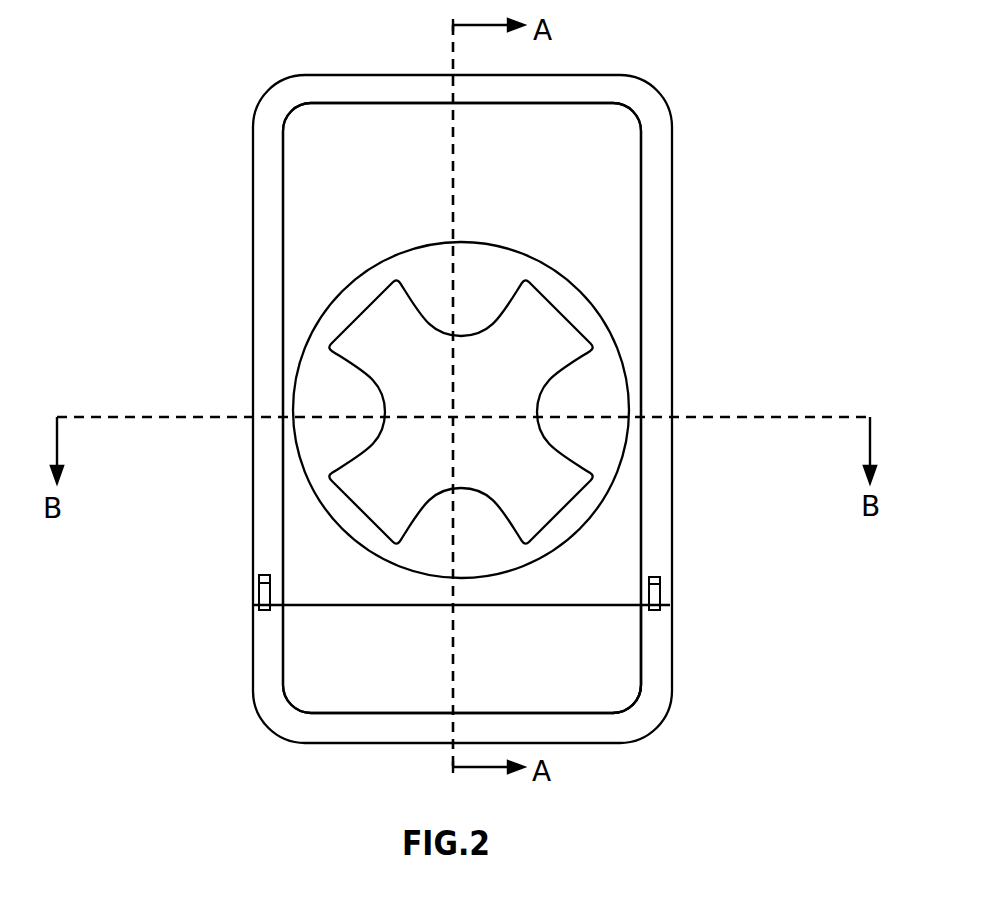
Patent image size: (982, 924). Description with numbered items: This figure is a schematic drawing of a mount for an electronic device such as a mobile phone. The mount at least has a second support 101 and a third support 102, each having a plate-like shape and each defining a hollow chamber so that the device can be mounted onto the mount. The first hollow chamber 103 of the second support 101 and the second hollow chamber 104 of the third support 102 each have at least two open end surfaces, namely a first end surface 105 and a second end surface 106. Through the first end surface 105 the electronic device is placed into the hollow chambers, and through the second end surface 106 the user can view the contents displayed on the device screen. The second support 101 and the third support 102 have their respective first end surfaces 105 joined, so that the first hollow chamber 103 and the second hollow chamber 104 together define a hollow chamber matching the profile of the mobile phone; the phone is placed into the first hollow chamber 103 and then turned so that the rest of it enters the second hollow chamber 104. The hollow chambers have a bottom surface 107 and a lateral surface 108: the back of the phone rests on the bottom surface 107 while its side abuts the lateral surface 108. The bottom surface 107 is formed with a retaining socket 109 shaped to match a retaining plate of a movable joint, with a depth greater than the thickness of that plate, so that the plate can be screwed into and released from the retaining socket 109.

The second support 101 is at (641, 262).
The third support 102 is at (641, 670).
The first hollow chamber 103 is at (480, 200).
The second hollow chamber 104 is at (335, 670).
The first end surface 105 is at (555, 597).
The second end surface 106 is at (320, 598).
The bottom surface 107 is at (325, 383).
The lateral surface 108 is at (393, 102).
The retaining socket 109 is at (465, 362).